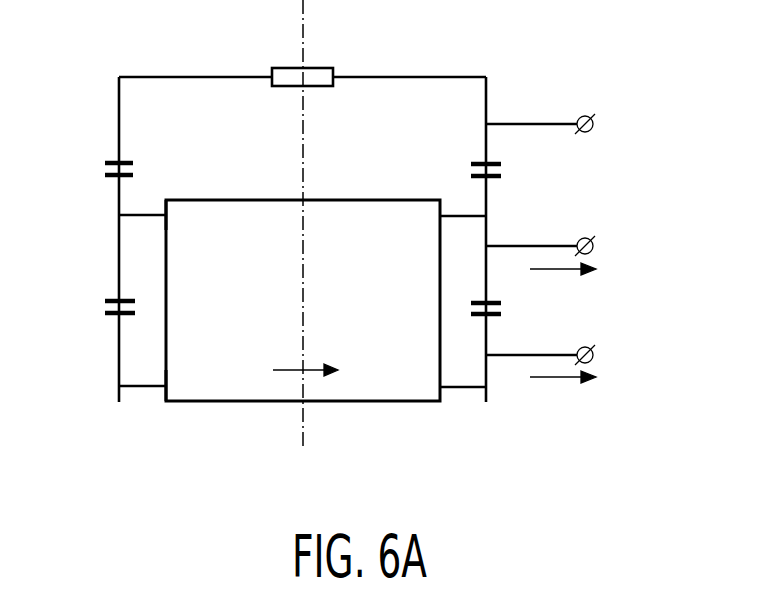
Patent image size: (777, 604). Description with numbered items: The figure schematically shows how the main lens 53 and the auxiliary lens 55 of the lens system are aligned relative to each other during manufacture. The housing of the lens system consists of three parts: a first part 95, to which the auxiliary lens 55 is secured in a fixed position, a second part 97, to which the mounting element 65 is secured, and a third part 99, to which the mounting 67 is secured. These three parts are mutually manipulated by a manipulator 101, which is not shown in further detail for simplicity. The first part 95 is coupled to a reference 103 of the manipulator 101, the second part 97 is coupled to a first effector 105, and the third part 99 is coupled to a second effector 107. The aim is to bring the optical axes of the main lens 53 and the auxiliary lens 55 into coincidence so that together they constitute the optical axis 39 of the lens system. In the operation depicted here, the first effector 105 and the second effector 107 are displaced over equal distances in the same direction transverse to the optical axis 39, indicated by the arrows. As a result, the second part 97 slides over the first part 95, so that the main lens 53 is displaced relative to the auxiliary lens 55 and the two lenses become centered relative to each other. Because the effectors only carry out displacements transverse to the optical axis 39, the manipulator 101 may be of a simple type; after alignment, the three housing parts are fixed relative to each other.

The optical axis 39 is at (303, 274).
The main lens 53 is at (386, 392).
The auxiliary lens 55 is at (318, 74).
The mounting element 65 is at (150, 213).
The mounting 67 is at (145, 388).
The first part 95 is at (119, 123).
The second part 97 is at (119, 252).
The third part 99 is at (119, 347).
The manipulator 101 is at (594, 247).
The reference 103 is at (594, 122).
The first effector 105 is at (594, 244).
The second effector 107 is at (594, 353).